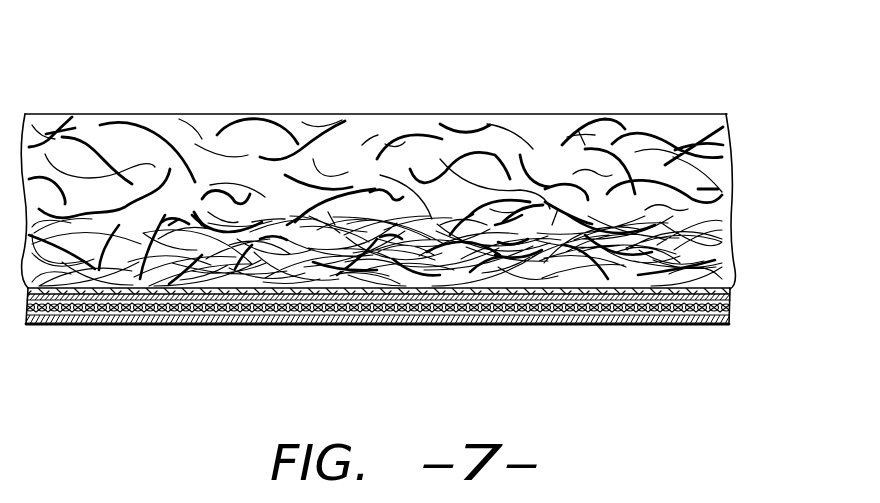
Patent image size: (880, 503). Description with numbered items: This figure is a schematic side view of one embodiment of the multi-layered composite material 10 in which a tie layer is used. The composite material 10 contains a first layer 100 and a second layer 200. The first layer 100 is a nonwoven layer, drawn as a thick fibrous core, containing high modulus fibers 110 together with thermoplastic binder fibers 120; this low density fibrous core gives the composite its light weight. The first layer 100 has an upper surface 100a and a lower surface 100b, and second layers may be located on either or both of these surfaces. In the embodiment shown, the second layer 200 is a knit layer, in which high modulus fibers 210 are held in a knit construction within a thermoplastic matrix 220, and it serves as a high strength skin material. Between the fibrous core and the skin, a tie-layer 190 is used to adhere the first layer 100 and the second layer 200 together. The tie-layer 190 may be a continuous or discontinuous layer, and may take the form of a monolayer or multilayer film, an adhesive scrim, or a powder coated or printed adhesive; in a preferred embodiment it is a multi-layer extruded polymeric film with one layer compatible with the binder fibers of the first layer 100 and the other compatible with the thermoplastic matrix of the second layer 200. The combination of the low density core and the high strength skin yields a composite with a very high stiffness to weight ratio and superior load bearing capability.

The multi-layered composite material 10 is at (585, 82).
The first layer 100 is at (436, 171).
The upper surface 100a is at (735, 289).
The lower surface 100b is at (751, 84).
The high modulus fibers 110 is at (158, 116).
The thermoplastic binder fibers 120 is at (313, 291).
The tie-layer 190 is at (735, 298).
The second layer 200 is at (430, 342).
The high modulus fibers 210 is at (137, 327).
The thermoplastic matrix 220 is at (220, 327).